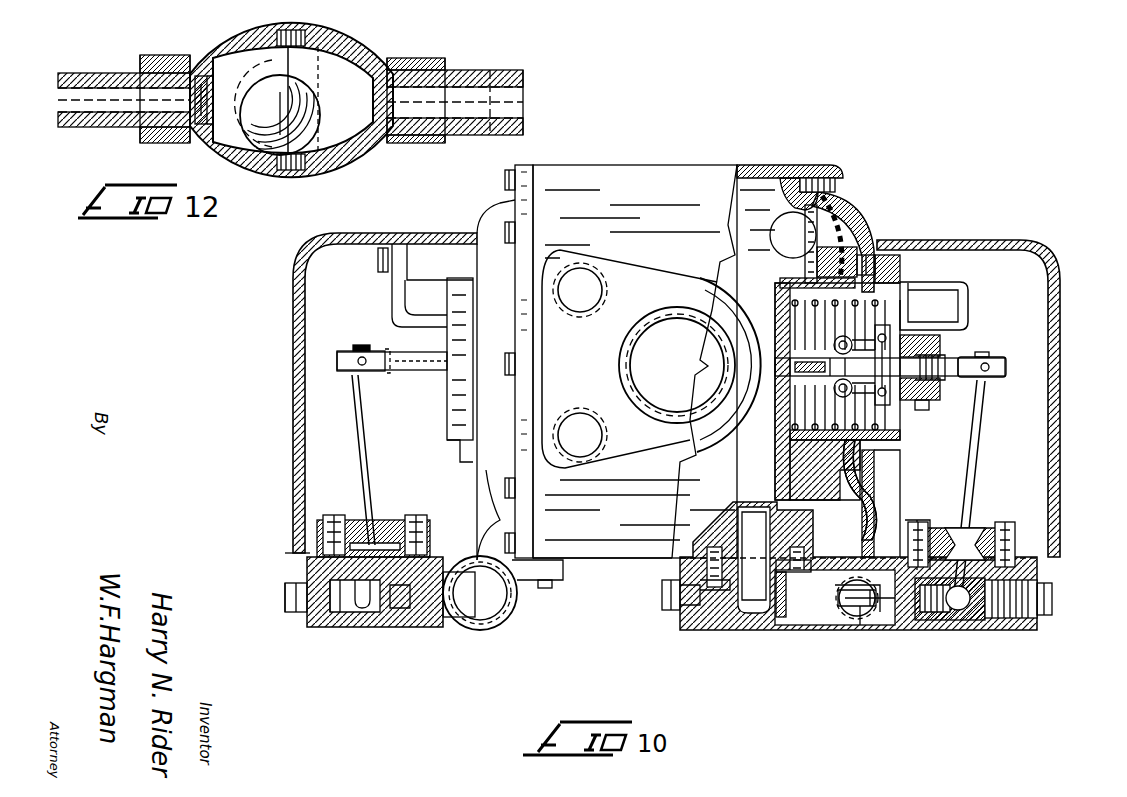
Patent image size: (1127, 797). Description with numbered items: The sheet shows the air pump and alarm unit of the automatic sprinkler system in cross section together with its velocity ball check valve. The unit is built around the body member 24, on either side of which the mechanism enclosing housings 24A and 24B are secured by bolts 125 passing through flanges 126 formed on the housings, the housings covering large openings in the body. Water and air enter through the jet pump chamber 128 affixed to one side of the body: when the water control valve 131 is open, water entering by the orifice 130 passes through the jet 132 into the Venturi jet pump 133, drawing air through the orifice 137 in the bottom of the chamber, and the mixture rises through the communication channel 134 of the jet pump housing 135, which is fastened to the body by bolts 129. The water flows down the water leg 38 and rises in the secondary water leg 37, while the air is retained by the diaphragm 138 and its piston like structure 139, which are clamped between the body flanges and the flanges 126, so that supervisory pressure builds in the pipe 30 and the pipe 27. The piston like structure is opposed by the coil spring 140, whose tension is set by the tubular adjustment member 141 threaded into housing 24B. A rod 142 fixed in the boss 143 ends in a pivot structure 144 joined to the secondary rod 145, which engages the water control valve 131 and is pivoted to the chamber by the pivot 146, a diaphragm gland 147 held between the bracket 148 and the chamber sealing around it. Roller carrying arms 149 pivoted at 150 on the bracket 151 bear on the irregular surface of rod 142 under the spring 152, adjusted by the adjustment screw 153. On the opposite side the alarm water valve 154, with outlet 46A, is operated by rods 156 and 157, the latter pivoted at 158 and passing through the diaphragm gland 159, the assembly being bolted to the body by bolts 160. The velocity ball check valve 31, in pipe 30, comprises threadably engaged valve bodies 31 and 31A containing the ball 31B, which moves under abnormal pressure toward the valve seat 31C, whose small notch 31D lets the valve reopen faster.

In FIG. 10, the body member 24 is at (610, 362).
In FIG. 10, the mechanism enclosing housing 24A is at (332, 240).
In FIG. 10, the mechanism enclosing housing 24B is at (1025, 248).
In FIG. 10, the pipe 27 is at (590, 438).
In FIG. 12, the pipe 30 is at (112, 73).
In FIG. 10, the pipe 30 is at (592, 288).
In FIG. 12, the velocity ball check valve 31 is at (248, 45).
In FIG. 12, the valve body 31A is at (340, 45).
In FIG. 12, the ball 31B is at (290, 85).
In FIG. 12, the valve seat 31C is at (212, 88).
In FIG. 12, the notch 31D is at (213, 130).
In FIG. 10, the secondary water leg 37 is at (628, 378).
In FIG. 10, the water leg 38 is at (745, 420).
In FIG. 10, the outlet to the alarm mechanism 46A is at (505, 608).
In FIG. 10, the bolts 125 is at (845, 178).
In FIG. 10, the flanges 126 is at (838, 205).
In FIG. 10, the jet pump chamber 128 is at (866, 620).
In FIG. 10, the bolts 129 is at (710, 595).
In FIG. 10, the orifice 130 is at (962, 615).
In FIG. 10, the water control valve 131 is at (930, 622).
In FIG. 10, the jet 132 is at (905, 545).
In FIG. 10, the Venturi jet pump 133 is at (822, 630).
In FIG. 10, the communication channel 134 is at (755, 618).
In FIG. 10, the jet pump housing 135 is at (788, 628).
In FIG. 10, the orifice 137 is at (860, 632).
In FIG. 10, the diaphragm 138 is at (878, 492).
In FIG. 10, the piston like structure 139 is at (770, 445).
In FIG. 10, the coil spring 140 is at (890, 415).
In FIG. 10, the tubular adjustment member 141 is at (895, 435).
In FIG. 10, the rod 142 is at (935, 362).
In FIG. 10, the boss 143 is at (790, 367).
In FIG. 10, the pivot structure 144 is at (1000, 360).
In FIG. 10, the secondary rod 145 is at (980, 455).
In FIG. 10, the pivot 146 is at (975, 525).
In FIG. 10, the diaphragm gland 147 is at (1020, 540).
In FIG. 10, the bracket 148 is at (1010, 528).
In FIG. 10, the roller carrying arms 149 is at (888, 330).
In FIG. 10, the pivot 150 is at (865, 366).
In FIG. 10, the bracket 151 is at (955, 305).
In FIG. 10, the spring 152 is at (938, 380).
In FIG. 10, the adjustment screw 153 is at (930, 407).
In FIG. 10, the alarm water valve 154 is at (440, 615).
In FIG. 10, the rod 156 is at (420, 372).
In FIG. 10, the rod 157 is at (370, 440).
In FIG. 10, the pivot point 158 is at (385, 535).
In FIG. 10, the diaphragm gland 159 is at (360, 540).
In FIG. 10, the bolts 160 is at (552, 588).